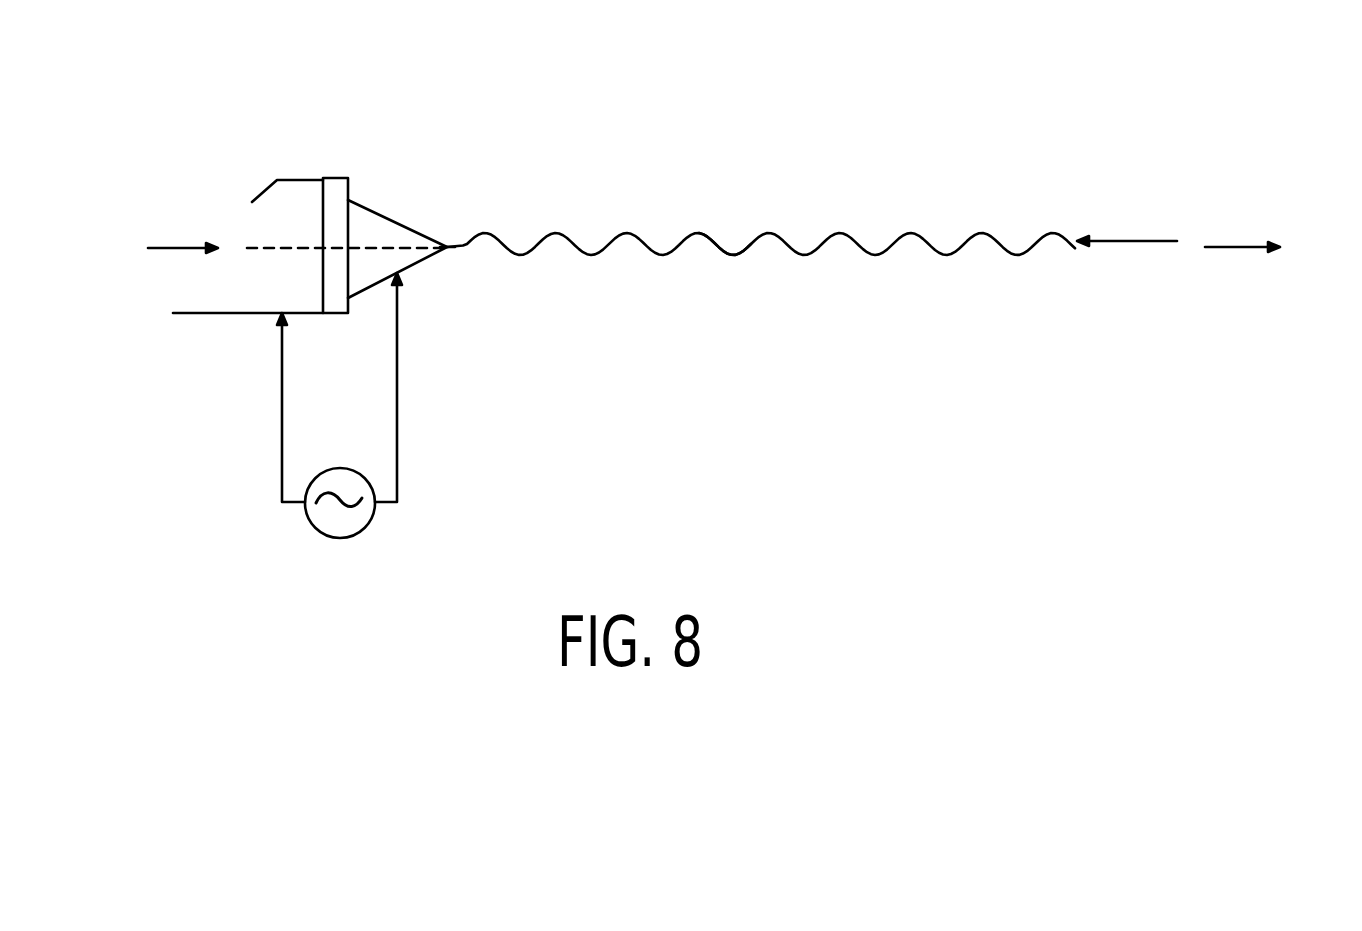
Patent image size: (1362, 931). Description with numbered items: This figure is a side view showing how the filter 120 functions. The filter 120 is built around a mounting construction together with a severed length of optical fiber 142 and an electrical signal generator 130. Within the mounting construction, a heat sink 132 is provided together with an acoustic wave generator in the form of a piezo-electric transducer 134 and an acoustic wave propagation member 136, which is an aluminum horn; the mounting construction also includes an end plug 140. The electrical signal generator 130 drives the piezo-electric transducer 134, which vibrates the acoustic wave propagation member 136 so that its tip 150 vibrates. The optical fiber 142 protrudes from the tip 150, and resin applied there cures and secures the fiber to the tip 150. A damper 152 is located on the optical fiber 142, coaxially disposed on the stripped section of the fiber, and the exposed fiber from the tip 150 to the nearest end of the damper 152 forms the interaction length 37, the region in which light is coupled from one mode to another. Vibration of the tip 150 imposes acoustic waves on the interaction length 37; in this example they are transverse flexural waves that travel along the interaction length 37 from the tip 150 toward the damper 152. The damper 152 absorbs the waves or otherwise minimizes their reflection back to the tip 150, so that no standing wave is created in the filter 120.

The filter 120 is at (726, 309).
The electrical signal generator 130 is at (362, 535).
The heat sink 132 is at (281, 267).
The piezo-electric transducer 134 is at (332, 172).
The acoustic wave propagation member 136 is at (409, 216).
The tip 150 is at (437, 250).
The interaction length 37 is at (854, 217).
The optical fiber 142 is at (729, 230).
The damper 152 is at (1095, 215).
The end plug 140 is at (1188, 213).